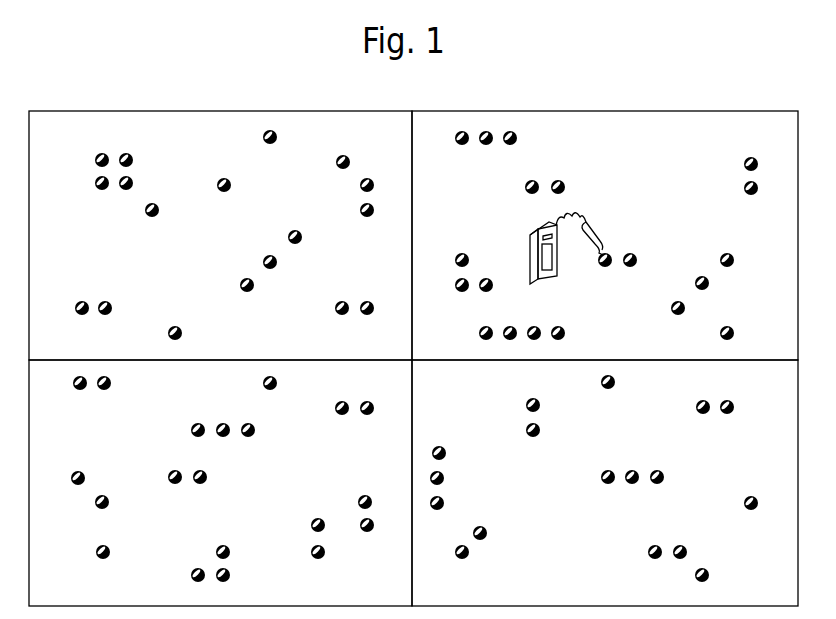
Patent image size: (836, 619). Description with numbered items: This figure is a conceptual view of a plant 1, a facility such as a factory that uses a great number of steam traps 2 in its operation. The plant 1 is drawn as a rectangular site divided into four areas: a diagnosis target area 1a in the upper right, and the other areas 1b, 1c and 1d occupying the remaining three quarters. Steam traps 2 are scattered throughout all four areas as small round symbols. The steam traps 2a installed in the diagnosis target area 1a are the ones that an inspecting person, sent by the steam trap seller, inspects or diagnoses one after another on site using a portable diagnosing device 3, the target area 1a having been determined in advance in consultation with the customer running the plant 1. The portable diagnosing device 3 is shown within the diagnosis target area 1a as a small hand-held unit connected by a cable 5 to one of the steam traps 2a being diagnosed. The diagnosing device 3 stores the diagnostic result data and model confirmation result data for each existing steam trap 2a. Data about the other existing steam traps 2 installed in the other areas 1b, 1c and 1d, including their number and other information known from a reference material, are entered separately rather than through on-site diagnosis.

The plant 1 is at (413, 333).
The diagnosis target area 1a is at (605, 235).
The other area 1b is at (220, 235).
The other area 1c is at (220, 483).
The other area 1d is at (605, 483).
The steam trap 2 is at (125, 190).
The steam trap in diagnosis target area 2a is at (509, 146).
The portable diagnosing device 3 is at (528, 260).
The cable with plug 5 is at (596, 232).